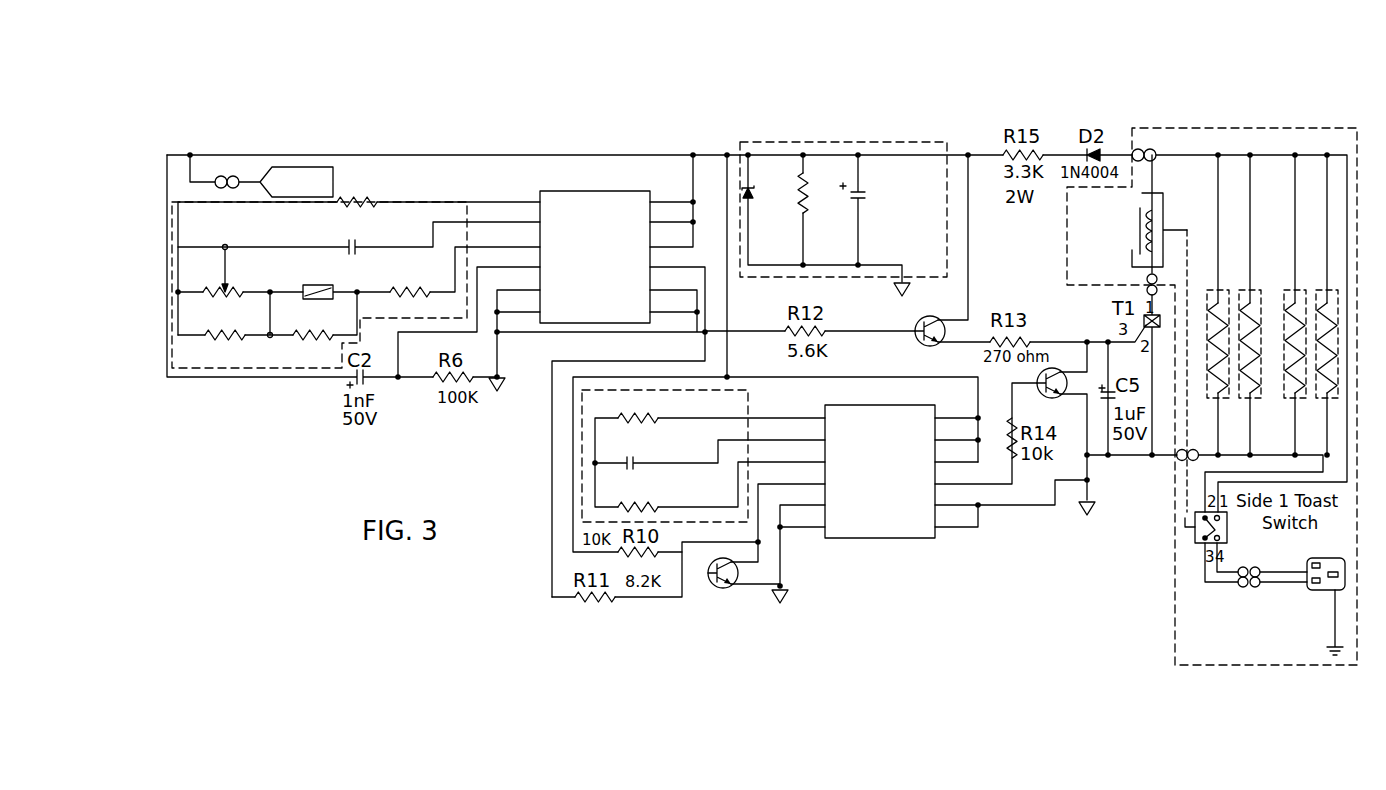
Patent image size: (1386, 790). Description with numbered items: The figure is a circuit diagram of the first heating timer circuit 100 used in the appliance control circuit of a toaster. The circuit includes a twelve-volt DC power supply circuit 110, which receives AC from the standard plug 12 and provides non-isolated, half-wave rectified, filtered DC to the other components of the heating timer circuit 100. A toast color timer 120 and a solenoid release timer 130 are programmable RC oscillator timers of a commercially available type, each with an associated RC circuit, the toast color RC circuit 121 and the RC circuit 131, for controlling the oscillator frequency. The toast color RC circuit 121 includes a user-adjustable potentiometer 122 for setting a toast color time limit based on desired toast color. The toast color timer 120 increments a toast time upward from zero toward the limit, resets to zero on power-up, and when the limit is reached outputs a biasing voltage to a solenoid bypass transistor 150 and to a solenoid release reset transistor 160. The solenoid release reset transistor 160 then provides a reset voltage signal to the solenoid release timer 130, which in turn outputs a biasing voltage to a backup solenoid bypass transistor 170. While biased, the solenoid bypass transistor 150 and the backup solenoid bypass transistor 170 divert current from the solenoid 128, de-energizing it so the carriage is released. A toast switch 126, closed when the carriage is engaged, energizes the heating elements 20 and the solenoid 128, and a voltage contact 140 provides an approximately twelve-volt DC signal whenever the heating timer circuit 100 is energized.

The first heating timer circuit 100 is at (1122, 95).
The 12V DC power supply circuit 110 is at (832, 138).
The toast color timer 120 is at (607, 176).
The toast color RC circuit 121 is at (356, 298).
The user-adjustable potentiometer 122 is at (243, 292).
The toast switch 126 is at (1283, 540).
The solenoid 128 is at (1137, 215).
The solenoid release timer 130 is at (946, 546).
The RC circuit 131 is at (575, 470).
The voltage contact 140 is at (300, 162).
The solenoid bypass transistor 150 is at (947, 303).
The solenoid release reset transistor 160 is at (745, 566).
The backup solenoid bypass transistor 170 is at (1057, 366).
The heating elements 20 is at (1340, 263).
The standard plug 12 is at (1332, 593).